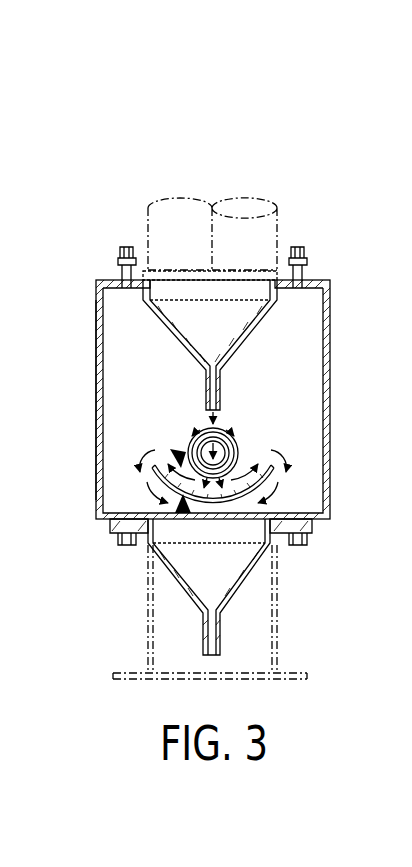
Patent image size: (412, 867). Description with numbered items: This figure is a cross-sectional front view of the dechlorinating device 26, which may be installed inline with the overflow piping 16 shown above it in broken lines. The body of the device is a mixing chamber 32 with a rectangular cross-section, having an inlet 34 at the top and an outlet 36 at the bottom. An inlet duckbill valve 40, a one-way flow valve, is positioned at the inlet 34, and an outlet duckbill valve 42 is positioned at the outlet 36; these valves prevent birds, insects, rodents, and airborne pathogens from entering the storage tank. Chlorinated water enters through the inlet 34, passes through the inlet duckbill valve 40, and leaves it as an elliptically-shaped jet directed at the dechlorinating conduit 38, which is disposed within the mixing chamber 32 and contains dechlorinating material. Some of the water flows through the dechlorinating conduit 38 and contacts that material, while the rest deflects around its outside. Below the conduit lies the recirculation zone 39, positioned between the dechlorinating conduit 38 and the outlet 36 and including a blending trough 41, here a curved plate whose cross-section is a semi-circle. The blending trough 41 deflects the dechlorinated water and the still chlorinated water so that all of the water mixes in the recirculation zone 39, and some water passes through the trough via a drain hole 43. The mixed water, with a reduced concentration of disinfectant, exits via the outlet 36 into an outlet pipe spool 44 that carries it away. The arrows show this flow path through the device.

The overflow piping 16 is at (147, 219).
The dechlorinating device 26 is at (97, 382).
The mixing chamber 32 is at (330, 428).
The inlet 34 is at (260, 272).
The outlet 36 is at (300, 548).
The dechlorinating conduit 38 is at (222, 427).
The recirculation zone 39 is at (178, 455).
The inlet duckbill valve 40 is at (270, 312).
The blending trough 41 is at (280, 480).
The outlet duckbill valve 42 is at (242, 585).
The drain hole 43 is at (183, 500).
The outlet pipe spool 44 is at (279, 640).